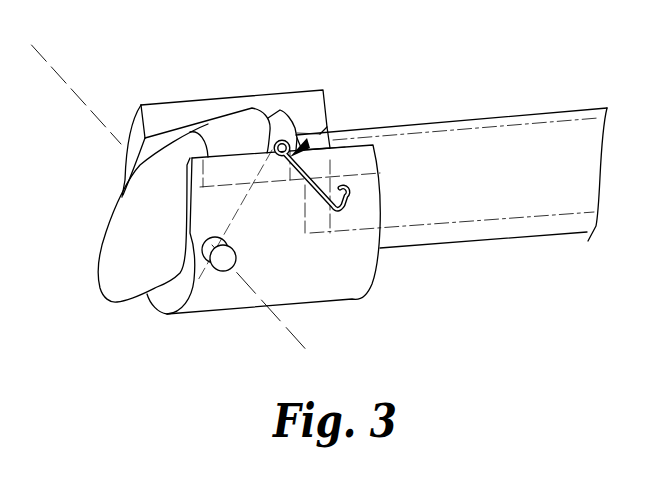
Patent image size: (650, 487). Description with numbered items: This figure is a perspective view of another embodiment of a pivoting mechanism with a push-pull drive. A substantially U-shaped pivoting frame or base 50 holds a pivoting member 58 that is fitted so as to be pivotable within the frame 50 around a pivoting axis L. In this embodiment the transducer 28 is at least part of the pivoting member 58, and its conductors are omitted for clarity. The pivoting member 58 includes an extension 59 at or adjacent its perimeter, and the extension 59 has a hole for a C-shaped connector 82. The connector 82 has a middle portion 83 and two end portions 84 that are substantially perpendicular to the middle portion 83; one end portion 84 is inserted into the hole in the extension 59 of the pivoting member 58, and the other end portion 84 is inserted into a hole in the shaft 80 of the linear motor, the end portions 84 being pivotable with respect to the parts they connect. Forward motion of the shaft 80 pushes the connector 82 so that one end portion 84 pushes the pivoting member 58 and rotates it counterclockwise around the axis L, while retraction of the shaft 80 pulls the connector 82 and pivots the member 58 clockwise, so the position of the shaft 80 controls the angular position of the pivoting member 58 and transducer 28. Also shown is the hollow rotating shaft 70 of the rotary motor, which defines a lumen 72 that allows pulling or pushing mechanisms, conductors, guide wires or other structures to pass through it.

The transducer 28 is at (147, 190).
The pivoting frame 50 is at (298, 103).
The pivoting member 58 is at (227, 130).
The extension 59 is at (272, 112).
The rotating shaft 70 is at (490, 119).
The lumen 72 is at (517, 126).
The shaft 80 is at (338, 155).
The C-shaped connector 82 is at (308, 137).
The middle portion 83 is at (287, 183).
The end portions 84 is at (284, 132).
The pivoting axis L is at (282, 328).